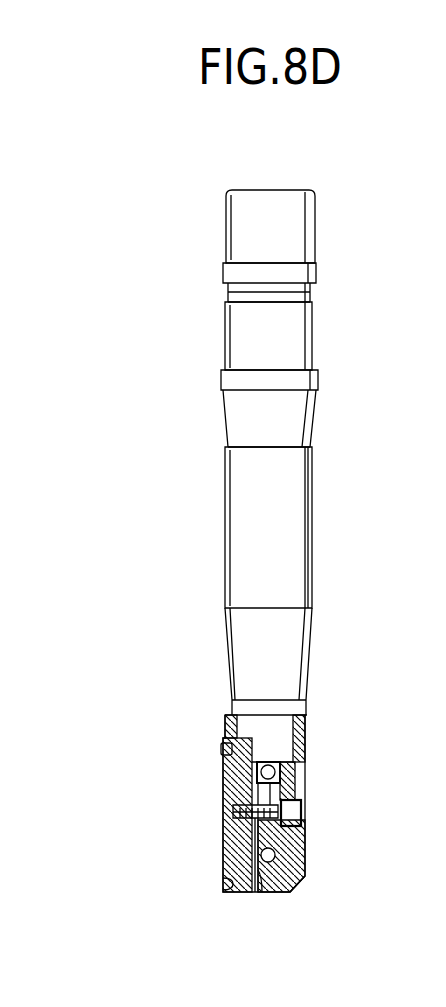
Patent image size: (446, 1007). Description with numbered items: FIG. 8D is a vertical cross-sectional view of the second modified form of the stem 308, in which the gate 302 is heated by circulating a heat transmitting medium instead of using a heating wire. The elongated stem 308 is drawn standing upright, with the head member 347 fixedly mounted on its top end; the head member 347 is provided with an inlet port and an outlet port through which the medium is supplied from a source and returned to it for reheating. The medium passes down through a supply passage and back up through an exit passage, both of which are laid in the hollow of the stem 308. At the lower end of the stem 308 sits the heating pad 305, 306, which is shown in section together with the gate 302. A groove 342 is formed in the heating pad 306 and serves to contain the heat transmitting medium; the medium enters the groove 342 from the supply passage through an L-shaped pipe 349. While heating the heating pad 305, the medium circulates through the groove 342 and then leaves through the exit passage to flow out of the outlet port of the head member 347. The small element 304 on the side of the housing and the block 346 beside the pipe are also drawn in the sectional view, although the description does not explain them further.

The gate 302 is at (230, 838).
The projection 304 is at (222, 749).
The heating pad 305 is at (262, 892).
The heating pad 306 is at (300, 888).
The stem 308 is at (313, 475).
The groove 342 is at (305, 857).
The block 346 is at (305, 811).
The head member 347 is at (272, 195).
The L-shaped pipe 349 is at (305, 775).